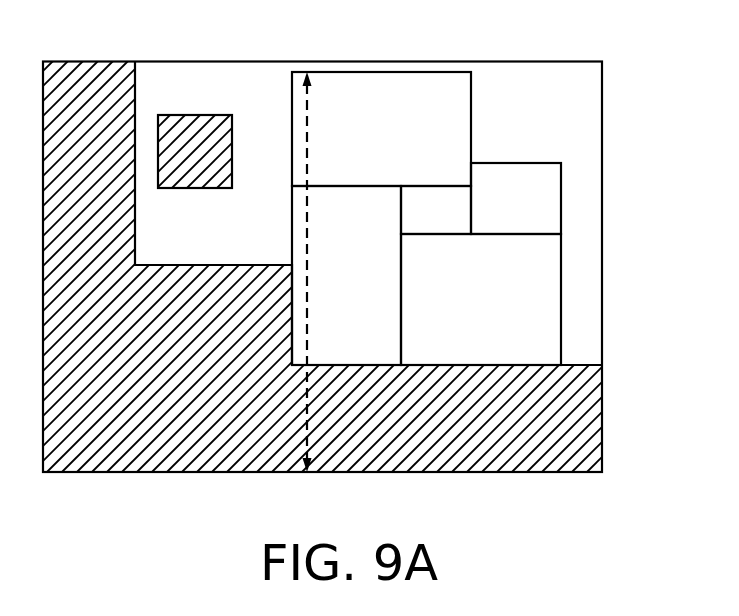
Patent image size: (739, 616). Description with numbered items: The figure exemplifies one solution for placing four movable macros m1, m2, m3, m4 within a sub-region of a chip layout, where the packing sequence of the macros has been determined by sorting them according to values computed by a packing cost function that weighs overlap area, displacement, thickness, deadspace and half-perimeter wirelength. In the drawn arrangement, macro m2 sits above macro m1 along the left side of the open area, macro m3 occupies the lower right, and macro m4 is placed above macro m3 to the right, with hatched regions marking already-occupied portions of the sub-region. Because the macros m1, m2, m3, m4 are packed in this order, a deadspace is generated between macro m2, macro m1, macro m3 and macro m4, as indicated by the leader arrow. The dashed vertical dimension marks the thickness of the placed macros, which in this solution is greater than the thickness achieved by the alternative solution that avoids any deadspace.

The movable macro m1 is at (346, 275).
The movable macro m2 is at (381, 129).
The movable macro m3 is at (481, 299).
The movable macro m4 is at (516, 198).
The element deadspace is at (441, 199).
The thickness of placed macros thickness is at (298, 148).